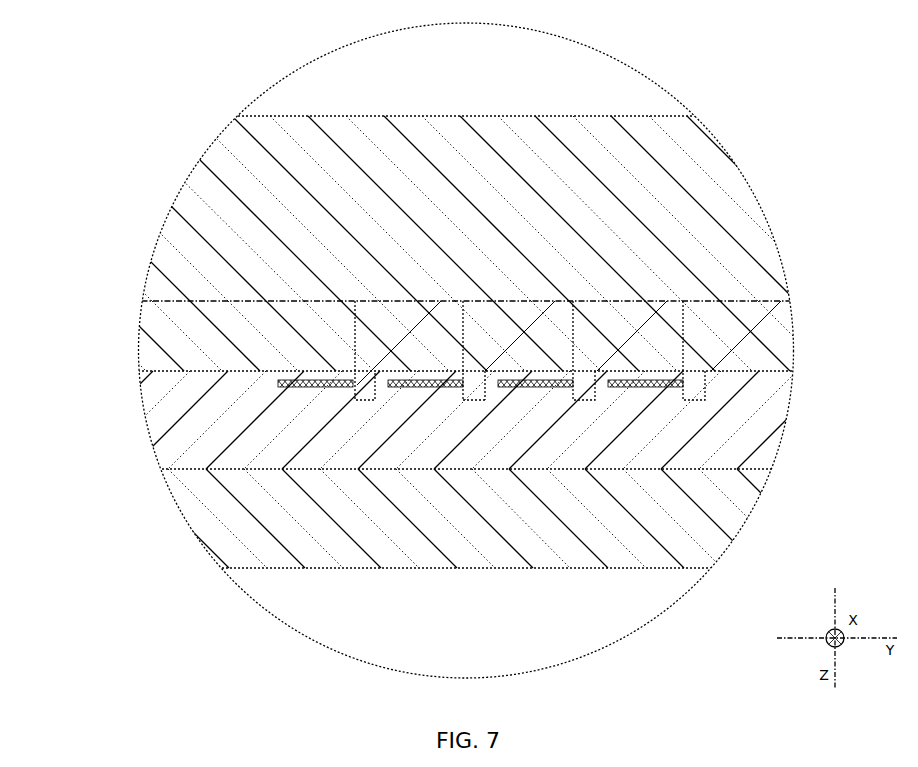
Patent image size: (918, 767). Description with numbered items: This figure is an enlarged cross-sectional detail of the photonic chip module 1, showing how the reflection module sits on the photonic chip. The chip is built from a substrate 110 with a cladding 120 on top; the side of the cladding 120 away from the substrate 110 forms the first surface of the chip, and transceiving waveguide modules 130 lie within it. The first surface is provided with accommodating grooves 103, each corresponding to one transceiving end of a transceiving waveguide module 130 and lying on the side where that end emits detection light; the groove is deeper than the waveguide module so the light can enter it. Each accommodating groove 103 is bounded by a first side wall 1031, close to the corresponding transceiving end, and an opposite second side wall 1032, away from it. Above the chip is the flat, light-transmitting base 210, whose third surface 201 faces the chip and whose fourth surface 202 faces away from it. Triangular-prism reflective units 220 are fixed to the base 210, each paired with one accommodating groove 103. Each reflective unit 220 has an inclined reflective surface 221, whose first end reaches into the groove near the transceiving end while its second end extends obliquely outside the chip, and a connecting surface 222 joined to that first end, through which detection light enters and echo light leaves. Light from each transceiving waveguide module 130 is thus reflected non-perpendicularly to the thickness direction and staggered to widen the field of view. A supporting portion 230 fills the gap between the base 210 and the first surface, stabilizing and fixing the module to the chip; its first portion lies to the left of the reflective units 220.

The photonic chip module 1 is at (90, 45).
The substrate 110 is at (205, 500).
The cladding 120 is at (170, 408).
The transceiving waveguide module 130 is at (283, 390).
The accommodating groove 103 is at (474, 457).
The first side wall 1031 is at (463, 395).
The second side wall 1032 is at (487, 393).
The third surface 201 is at (792, 300).
The fourth surface 202 is at (448, 115).
The base 210 is at (153, 297).
The reflective unit 220 is at (431, 405).
The reflective surface 221 is at (412, 335).
The connecting surface 222 is at (530, 457).
The supporting portion 230 is at (155, 332).